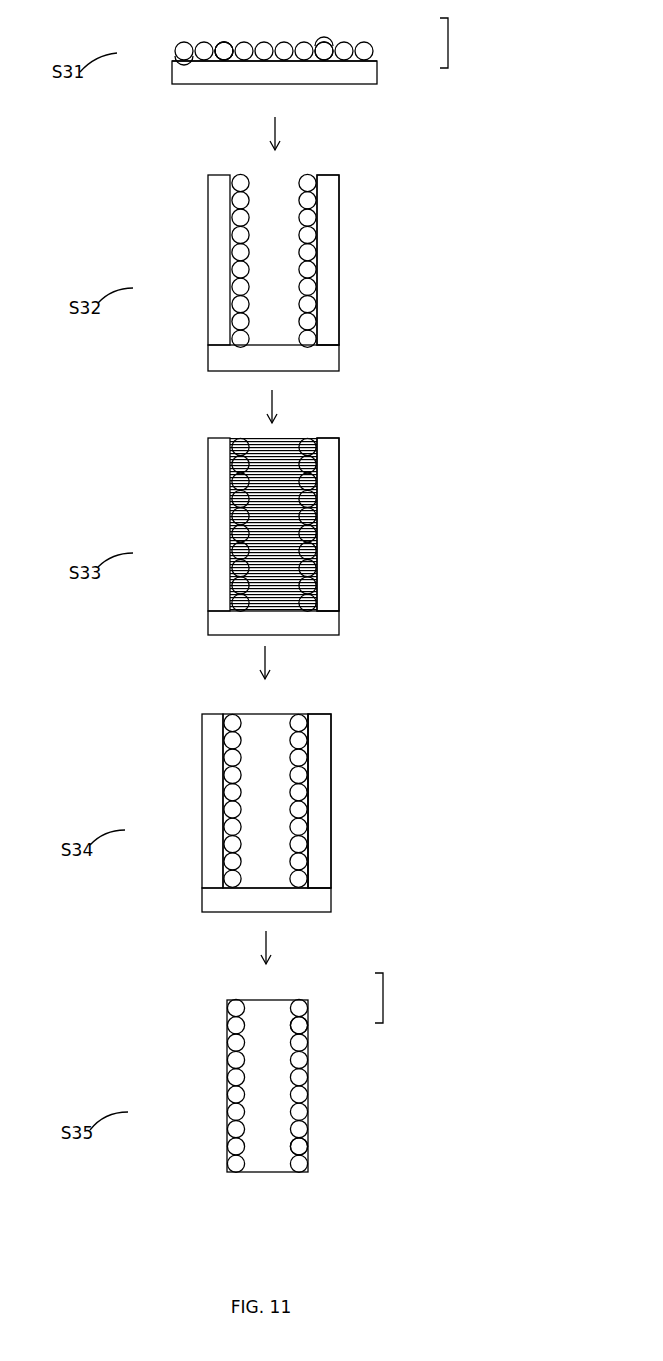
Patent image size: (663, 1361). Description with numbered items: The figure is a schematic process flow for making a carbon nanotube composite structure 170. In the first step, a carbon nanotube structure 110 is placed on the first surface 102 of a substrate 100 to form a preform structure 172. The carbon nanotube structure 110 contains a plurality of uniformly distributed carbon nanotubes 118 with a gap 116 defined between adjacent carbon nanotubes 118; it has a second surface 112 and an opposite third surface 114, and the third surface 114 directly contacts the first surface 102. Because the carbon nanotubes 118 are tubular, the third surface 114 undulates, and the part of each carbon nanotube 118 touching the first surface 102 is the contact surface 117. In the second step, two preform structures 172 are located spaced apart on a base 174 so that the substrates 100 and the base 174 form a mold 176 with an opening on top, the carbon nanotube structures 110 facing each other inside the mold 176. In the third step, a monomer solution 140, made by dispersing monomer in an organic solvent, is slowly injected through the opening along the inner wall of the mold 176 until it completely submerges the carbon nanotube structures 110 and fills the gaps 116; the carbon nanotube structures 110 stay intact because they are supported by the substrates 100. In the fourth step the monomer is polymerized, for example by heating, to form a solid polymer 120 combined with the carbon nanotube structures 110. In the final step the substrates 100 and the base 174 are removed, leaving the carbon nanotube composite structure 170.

The substrate 100 is at (360, 77).
The first surface 102 is at (193, 62).
The carbon nanotube structure 110 is at (372, 43).
The second surface 112 is at (322, 47).
The third surface 114 is at (187, 60).
The gap 116 is at (213, 55).
The contact surface 117 is at (325, 55).
The carbon nanotube 118 is at (222, 53).
The polymer 120 is at (270, 725).
The monomer solution 140 is at (285, 442).
The carbon nanotube composite structure 170 is at (399, 998).
The preform structure 172 is at (463, 43).
The base 174 is at (328, 360).
The mold 176 is at (345, 215).